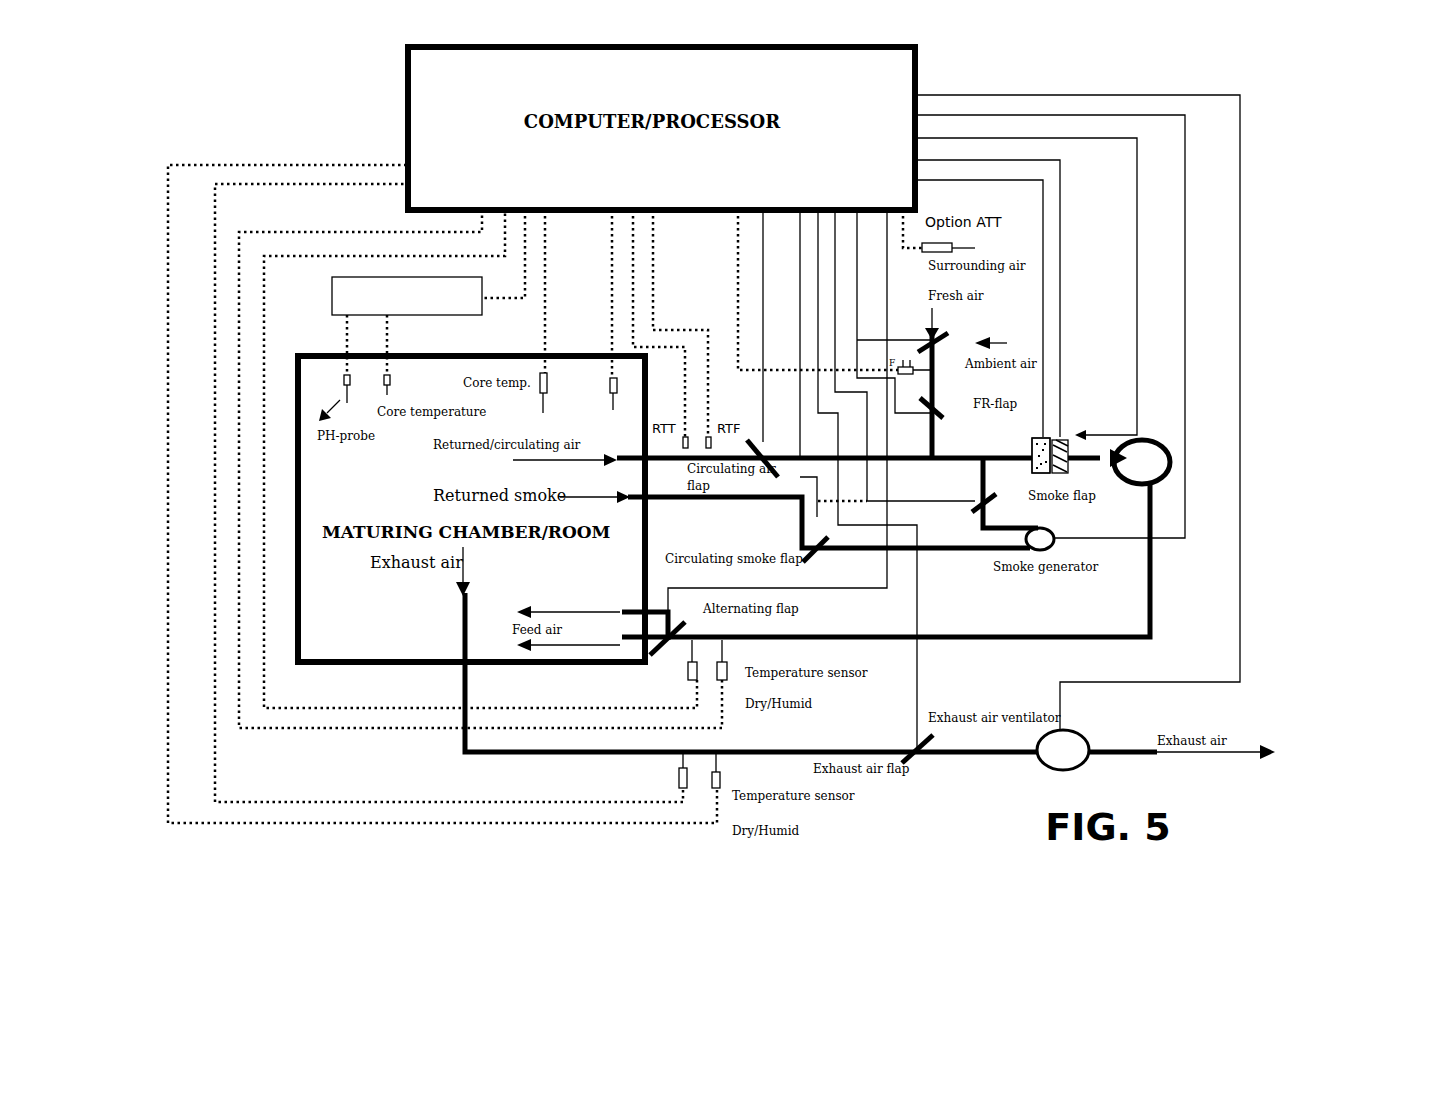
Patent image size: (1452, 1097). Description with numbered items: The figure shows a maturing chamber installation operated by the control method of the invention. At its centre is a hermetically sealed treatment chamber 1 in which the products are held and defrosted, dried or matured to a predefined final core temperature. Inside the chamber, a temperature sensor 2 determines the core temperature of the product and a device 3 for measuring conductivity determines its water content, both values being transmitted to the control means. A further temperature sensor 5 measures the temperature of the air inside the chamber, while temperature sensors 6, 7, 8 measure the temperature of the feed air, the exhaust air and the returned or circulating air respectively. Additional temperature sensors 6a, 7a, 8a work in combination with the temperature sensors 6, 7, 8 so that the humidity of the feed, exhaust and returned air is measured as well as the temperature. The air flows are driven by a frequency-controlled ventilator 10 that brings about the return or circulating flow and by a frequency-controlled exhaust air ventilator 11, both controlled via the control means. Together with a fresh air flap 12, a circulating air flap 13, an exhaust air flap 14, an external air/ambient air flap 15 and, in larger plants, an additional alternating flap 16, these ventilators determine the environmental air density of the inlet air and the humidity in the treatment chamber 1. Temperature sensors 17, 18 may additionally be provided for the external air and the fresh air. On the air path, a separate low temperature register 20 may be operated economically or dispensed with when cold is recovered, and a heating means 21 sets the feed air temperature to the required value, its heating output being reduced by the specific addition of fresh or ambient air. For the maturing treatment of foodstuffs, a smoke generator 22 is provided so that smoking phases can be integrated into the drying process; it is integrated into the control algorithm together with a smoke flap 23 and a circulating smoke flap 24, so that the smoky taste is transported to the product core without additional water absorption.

The treatment chamber 1 is at (313, 565).
The temperature sensor 2 is at (540, 376).
The device for measuring conductivity 3 is at (332, 297).
The temperature sensor 5 is at (608, 375).
The temperature sensor 6 is at (688, 672).
The additional temperature sensor 6a is at (718, 672).
The temperature sensor 7 is at (683, 787).
The additional temperature sensor 7a is at (715, 787).
The temperature sensor 8 is at (688, 437).
The additional temperature sensor 8a is at (712, 437).
The frequency-controlled ventilator 10 is at (1180, 472).
The frequency-controlled exhaust air ventilator 11 is at (1067, 755).
The fresh air flap 12 is at (1058, 428).
The circulating air flap 13 is at (770, 468).
The exhaust air flap 14 is at (925, 758).
The external air/ambient air flap 15 is at (945, 340).
The alternating flap 16 is at (650, 655).
The temperature sensor 17 is at (952, 243).
The temperature sensor 18 is at (947, 402).
The low temperature register 20 is at (1085, 436).
The heating means 21 is at (1140, 433).
The smoke generator 22 is at (1055, 542).
The smoke flap 23 is at (1003, 503).
The circulating smoke flap 24 is at (812, 550).